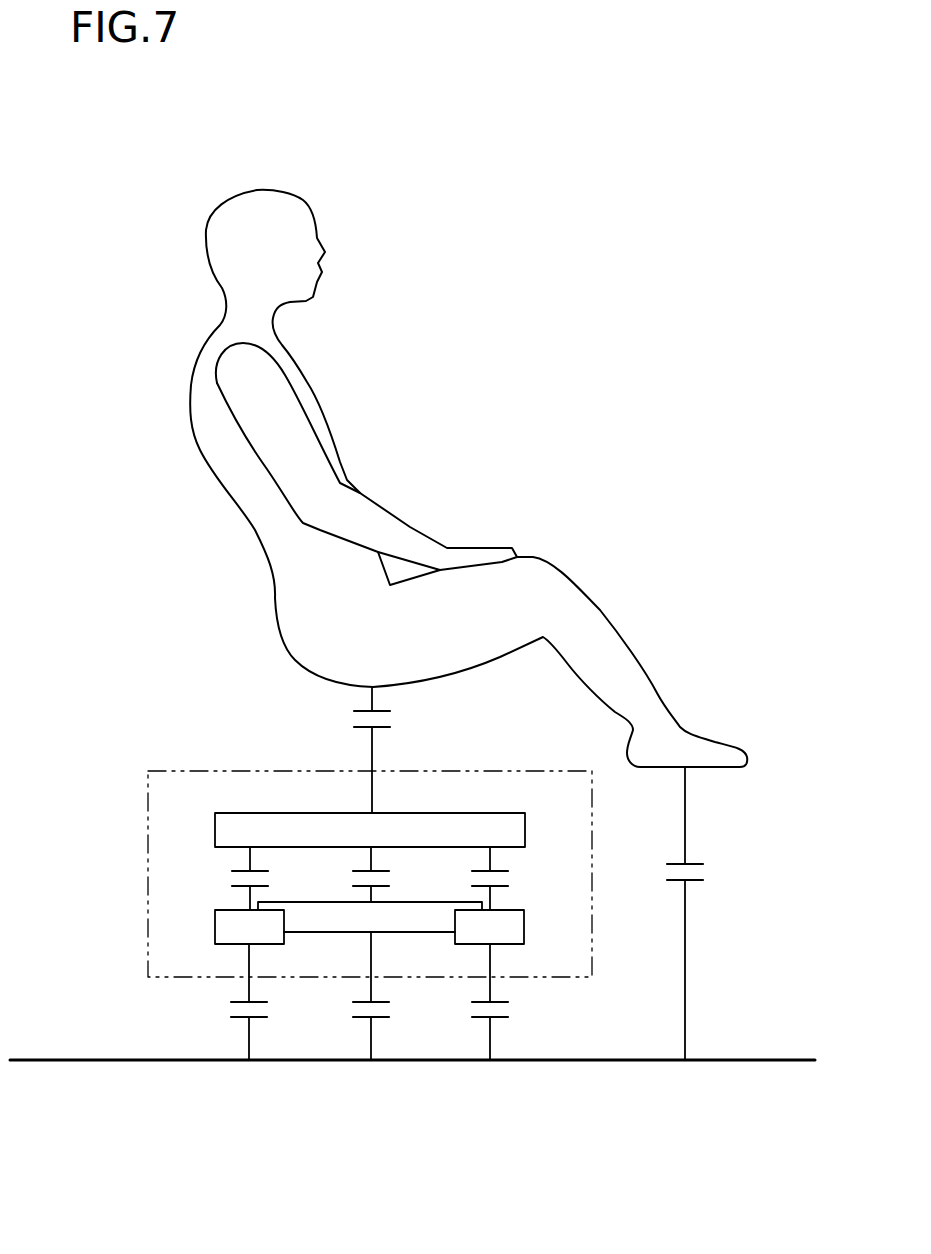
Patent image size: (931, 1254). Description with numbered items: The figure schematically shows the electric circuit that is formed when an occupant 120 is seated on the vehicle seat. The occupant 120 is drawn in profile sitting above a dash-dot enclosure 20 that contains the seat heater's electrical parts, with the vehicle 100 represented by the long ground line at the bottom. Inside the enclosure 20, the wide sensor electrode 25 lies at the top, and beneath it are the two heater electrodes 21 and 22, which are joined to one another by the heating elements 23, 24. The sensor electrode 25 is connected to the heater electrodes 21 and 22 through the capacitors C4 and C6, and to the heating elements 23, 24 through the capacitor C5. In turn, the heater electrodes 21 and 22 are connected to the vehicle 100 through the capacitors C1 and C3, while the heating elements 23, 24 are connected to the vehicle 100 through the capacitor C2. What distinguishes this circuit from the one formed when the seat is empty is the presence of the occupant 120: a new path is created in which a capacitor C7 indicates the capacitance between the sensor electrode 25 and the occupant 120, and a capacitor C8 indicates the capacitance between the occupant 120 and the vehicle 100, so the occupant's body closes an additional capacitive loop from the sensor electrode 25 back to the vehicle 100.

The occupant 120 is at (266, 190).
The vehicle 100 is at (42, 1058).
The capacitance sensor unit 20 is at (184, 770).
The sensor electrode 25 is at (215, 832).
The heater electrode 21 is at (215, 928).
The heater electrode 22 is at (525, 928).
The heating element 23 is at (411, 934).
The heating element 24 is at (414, 949).
The capacitor C1 is at (235, 1002).
The capacitor C2 is at (355, 996).
The capacitor C3 is at (474, 1002).
The capacitor C4 is at (237, 878).
The capacitor C5 is at (357, 874).
The capacitor C6 is at (476, 878).
The capacitor C7 is at (357, 750).
The capacitor C8 is at (670, 913).